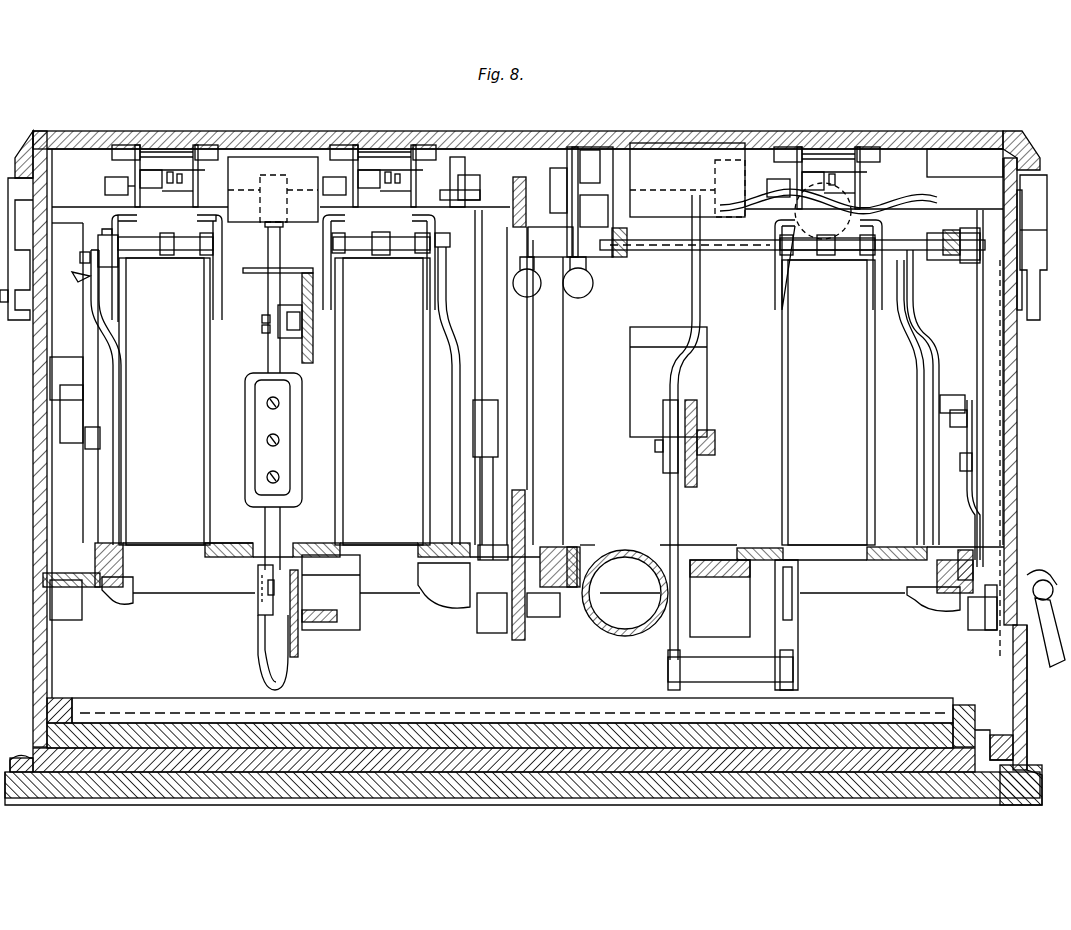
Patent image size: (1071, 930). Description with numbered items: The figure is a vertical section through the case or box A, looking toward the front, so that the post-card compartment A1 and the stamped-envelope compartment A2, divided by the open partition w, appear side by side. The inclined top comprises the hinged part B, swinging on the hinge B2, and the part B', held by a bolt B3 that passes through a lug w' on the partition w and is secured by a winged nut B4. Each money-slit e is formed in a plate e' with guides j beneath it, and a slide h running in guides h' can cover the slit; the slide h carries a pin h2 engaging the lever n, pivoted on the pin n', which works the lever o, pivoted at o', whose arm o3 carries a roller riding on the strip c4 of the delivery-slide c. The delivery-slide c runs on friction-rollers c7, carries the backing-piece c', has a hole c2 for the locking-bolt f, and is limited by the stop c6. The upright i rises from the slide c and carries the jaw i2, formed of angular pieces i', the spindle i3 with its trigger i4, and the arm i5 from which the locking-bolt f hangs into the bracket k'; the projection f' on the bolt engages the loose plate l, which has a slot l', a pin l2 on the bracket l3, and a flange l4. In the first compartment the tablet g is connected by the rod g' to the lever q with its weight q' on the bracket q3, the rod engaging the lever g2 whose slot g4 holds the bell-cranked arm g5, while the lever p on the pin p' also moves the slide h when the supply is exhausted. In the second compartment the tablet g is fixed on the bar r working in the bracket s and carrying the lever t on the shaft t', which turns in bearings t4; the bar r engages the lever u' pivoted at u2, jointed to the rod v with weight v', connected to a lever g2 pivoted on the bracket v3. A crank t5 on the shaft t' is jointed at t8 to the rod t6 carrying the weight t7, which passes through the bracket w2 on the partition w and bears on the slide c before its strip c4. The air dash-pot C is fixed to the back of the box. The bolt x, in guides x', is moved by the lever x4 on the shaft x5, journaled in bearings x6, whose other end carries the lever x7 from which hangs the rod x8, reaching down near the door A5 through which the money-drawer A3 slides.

The case or box A is at (33, 474).
The compartment A1 is at (742, 340).
The compartment A2 is at (226, 358).
The money-drawer A3 is at (440, 716).
The door A5 is at (1030, 700).
The hinged part of top B is at (1042, 247).
The part of top B' is at (585, 184).
The hinge B2 is at (1041, 300).
The bolt B3 is at (540, 290).
The winged nut B4 is at (595, 288).
The air dash-pot C is at (625, 593).
The delivery-slide c is at (549, 568).
The plate or backing-piece c' is at (991, 607).
The hole c2 is at (942, 545).
The ledge or strip c4 is at (475, 600).
The stop c6 is at (526, 596).
The friction-rollers c7 is at (78, 615).
The money-slit e is at (492, 160).
The plate e' is at (642, 144).
The locking-bolt f is at (507, 389).
The projection f' is at (528, 449).
The tablet g is at (486, 182).
The rod g' is at (699, 427).
The lever g2 is at (288, 672).
The slot g4 is at (797, 610).
The arm of bell-cranked piece g5 is at (797, 580).
The slide h is at (506, 153).
The guides h' is at (490, 167).
The pin h2 is at (823, 211).
The upright i is at (497, 401).
The angularly-shaped pieces i' is at (496, 279).
The jaw or support i2 is at (497, 261).
The spindle i3 is at (146, 246).
The finger or trigger i4 is at (168, 246).
The arm or lever i5 is at (914, 262).
The guides j is at (125, 196).
The bracket k' is at (531, 598).
The loose plate l is at (508, 400).
The slot l' is at (100, 393).
The pin l2 is at (955, 432).
The bracket l3 is at (67, 373).
The projecting flange l4 is at (956, 410).
The lever n is at (828, 201).
The pin n' is at (691, 189).
The lever o is at (987, 388).
The pivot o' is at (962, 480).
The arm o3 is at (972, 548).
The double-ended lever p is at (729, 245).
The pin p' is at (754, 245).
The lever q is at (654, 436).
The weight q' is at (668, 382).
The bracket q3 is at (698, 472).
The bar or rod r is at (264, 266).
The bracket s is at (301, 318).
The lever t is at (278, 297).
The shaft t' is at (274, 193).
The bearings t4 is at (105, 185).
The lever or crank t5 is at (480, 182).
The rod t6 is at (475, 312).
The weight t7 is at (485, 480).
The joint t8 is at (460, 208).
The lever u' is at (290, 331).
The pivot u2 is at (262, 318).
The vertical rod v is at (273, 456).
The weight v' is at (282, 440).
The bracket v3 is at (298, 648).
The open partition w is at (531, 408).
The lug w' is at (550, 242).
The bracket w2 is at (484, 550).
The bolt x is at (590, 202).
The guides x' is at (604, 187).
The lever x4 is at (555, 190).
The shaft x5 is at (652, 250).
The bearings x6 is at (950, 257).
The lever x7 is at (965, 247).
The rod x8 is at (1000, 650).